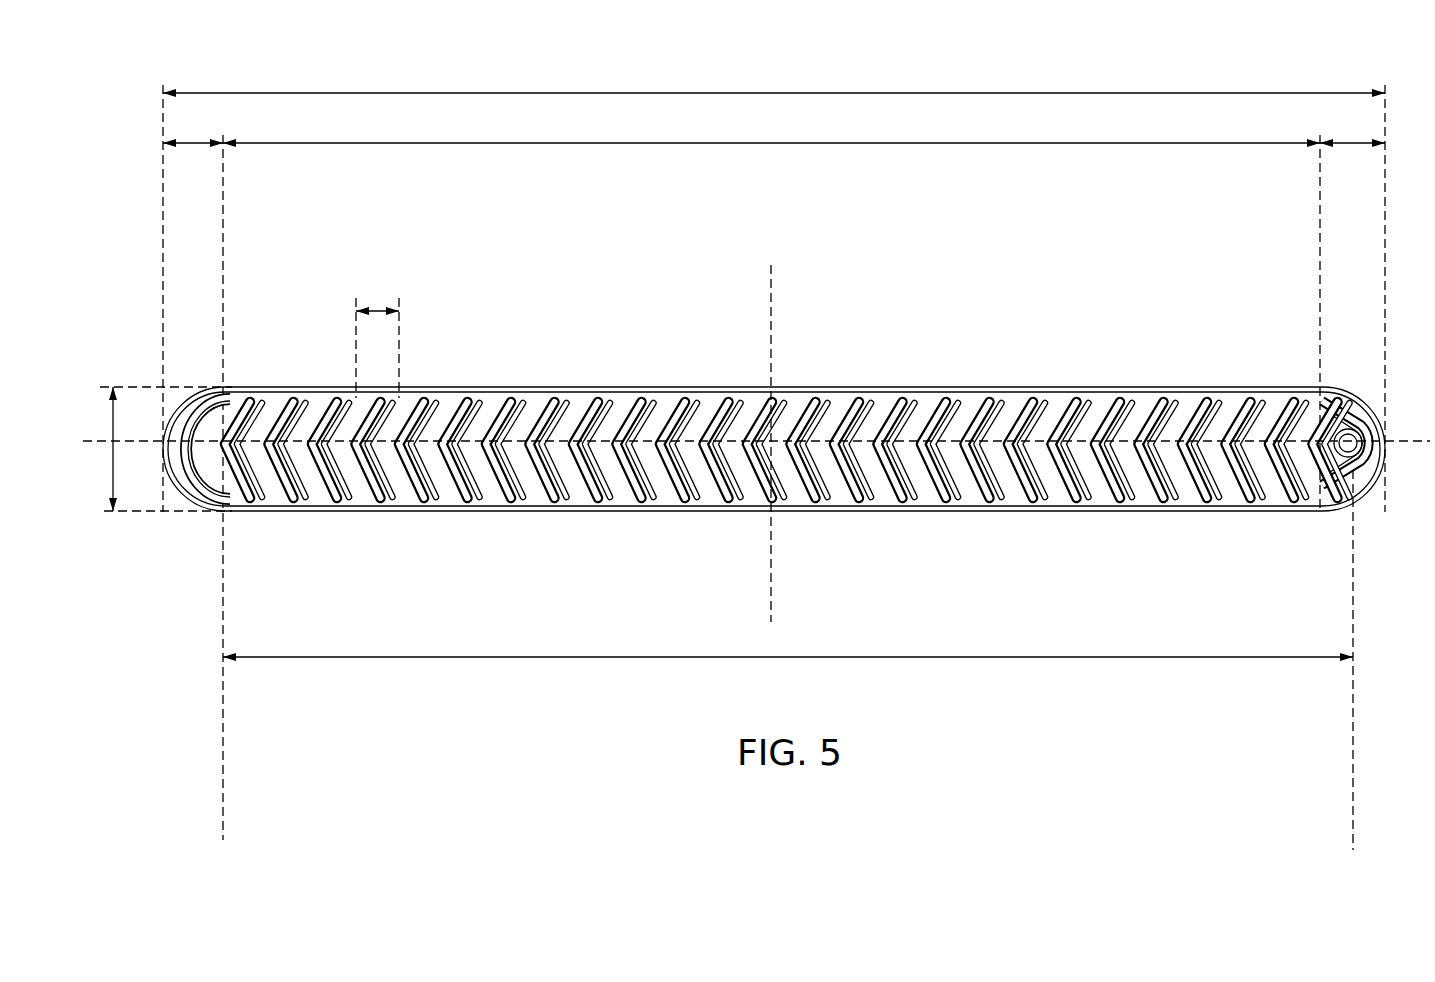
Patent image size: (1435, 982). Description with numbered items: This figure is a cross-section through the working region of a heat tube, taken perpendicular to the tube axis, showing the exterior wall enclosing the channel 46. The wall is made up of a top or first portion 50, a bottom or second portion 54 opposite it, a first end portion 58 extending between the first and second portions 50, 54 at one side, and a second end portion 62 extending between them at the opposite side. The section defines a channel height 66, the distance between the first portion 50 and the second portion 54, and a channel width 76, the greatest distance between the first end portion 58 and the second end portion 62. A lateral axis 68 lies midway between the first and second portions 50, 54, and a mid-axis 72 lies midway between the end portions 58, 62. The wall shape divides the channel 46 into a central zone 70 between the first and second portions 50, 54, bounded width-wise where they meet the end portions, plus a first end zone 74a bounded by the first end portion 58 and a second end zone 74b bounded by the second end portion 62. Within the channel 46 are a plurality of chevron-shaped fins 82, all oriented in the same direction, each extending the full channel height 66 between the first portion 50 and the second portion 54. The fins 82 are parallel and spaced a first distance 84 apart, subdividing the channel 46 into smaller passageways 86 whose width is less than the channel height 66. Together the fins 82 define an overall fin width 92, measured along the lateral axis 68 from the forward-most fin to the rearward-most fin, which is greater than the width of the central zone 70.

The channel 46 is at (965, 500).
The first portion 50 is at (774, 454).
The second portion 54 is at (588, 511).
The first end portion 58 is at (196, 490).
The second end portion 62 is at (1342, 478).
The channel height 66 is at (116, 455).
The lateral axis 68 is at (1423, 444).
The central zone 70 is at (826, 146).
The mid-axis 72 is at (774, 582).
The first end zone 74a is at (190, 146).
The second end zone 74b is at (1353, 146).
The channel width 76 is at (869, 92).
The fins 82 is at (345, 498).
The first distance 84 is at (378, 310).
The passageways 86 is at (1008, 468).
The overall fin width 92 is at (1100, 659).